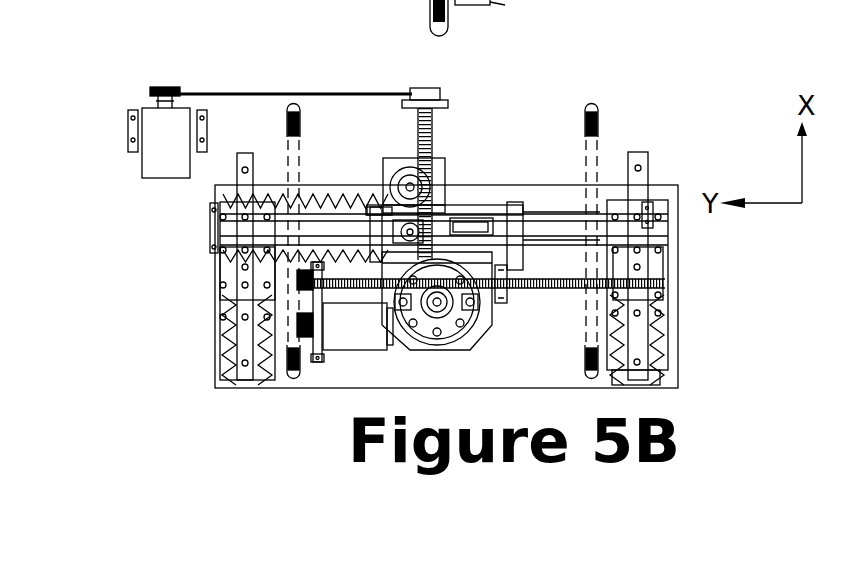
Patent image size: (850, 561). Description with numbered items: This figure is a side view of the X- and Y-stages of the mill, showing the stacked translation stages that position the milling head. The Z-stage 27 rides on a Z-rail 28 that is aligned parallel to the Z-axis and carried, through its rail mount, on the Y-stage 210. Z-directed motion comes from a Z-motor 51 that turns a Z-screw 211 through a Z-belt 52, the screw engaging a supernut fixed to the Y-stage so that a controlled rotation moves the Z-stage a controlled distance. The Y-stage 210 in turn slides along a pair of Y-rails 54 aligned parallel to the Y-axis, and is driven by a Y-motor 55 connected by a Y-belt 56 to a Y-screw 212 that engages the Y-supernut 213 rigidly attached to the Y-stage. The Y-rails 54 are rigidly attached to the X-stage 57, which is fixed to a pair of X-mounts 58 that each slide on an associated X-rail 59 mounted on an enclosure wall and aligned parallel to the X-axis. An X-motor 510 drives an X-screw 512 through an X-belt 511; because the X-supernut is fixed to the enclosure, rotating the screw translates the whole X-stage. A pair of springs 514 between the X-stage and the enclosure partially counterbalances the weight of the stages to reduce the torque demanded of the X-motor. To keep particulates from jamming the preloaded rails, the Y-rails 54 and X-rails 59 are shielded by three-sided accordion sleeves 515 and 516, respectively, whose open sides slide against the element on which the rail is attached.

The Z-stage 27 is at (488, 338).
The Z-rail 28 is at (475, 223).
The Z-motor 51 is at (405, 165).
The Z-belt 52 is at (392, 170).
The Y-rail 54 is at (570, 240).
The Y-motor 55 is at (370, 340).
The Y-belt 56 is at (302, 345).
The X-stage 57 is at (465, 378).
The X-mounts 58 is at (237, 285).
The X-rail 59 is at (245, 153).
The Y-stage 210 is at (512, 202).
The Z-screw 211 is at (387, 212).
The Y-screw 212 is at (557, 288).
The Y-supernut 213 is at (502, 277).
The X-motor 510 is at (162, 167).
The X-belt 511 is at (270, 95).
The X-screw 512 is at (428, 180).
The springs 514 is at (297, 153).
The accordion sleeve 515 is at (225, 260).
The accordion sleeve 516 is at (225, 385).